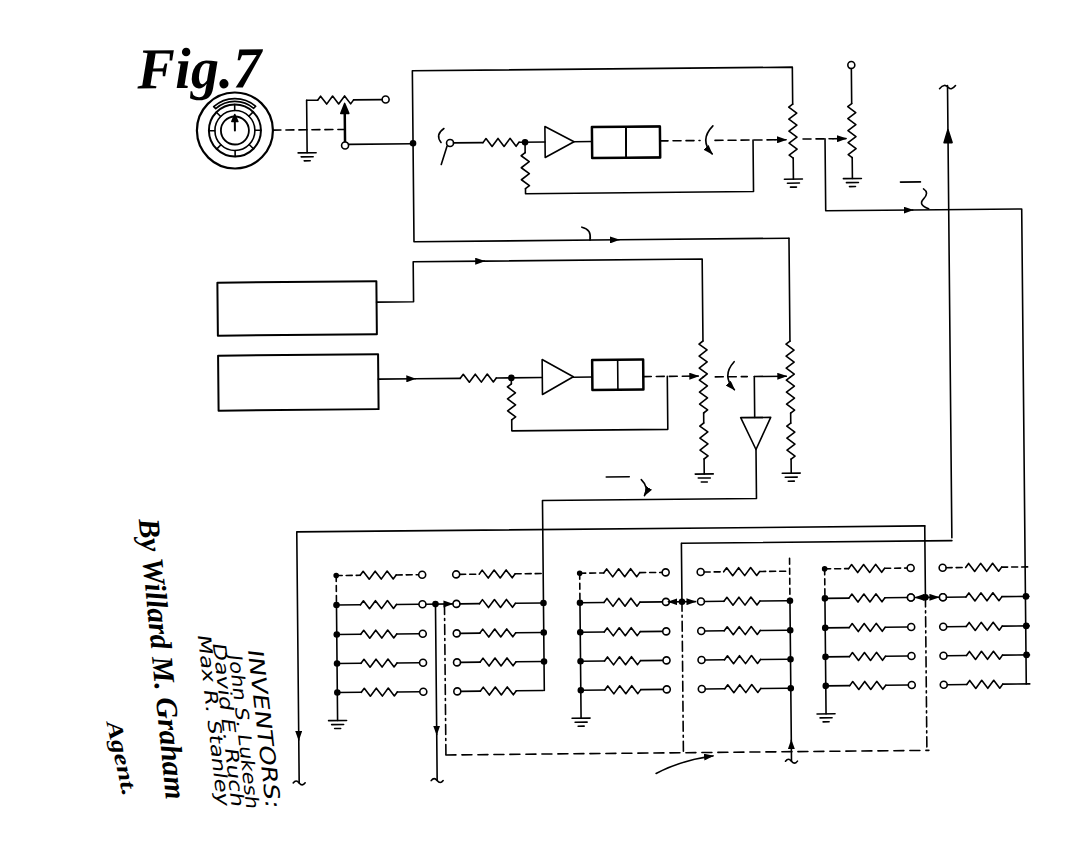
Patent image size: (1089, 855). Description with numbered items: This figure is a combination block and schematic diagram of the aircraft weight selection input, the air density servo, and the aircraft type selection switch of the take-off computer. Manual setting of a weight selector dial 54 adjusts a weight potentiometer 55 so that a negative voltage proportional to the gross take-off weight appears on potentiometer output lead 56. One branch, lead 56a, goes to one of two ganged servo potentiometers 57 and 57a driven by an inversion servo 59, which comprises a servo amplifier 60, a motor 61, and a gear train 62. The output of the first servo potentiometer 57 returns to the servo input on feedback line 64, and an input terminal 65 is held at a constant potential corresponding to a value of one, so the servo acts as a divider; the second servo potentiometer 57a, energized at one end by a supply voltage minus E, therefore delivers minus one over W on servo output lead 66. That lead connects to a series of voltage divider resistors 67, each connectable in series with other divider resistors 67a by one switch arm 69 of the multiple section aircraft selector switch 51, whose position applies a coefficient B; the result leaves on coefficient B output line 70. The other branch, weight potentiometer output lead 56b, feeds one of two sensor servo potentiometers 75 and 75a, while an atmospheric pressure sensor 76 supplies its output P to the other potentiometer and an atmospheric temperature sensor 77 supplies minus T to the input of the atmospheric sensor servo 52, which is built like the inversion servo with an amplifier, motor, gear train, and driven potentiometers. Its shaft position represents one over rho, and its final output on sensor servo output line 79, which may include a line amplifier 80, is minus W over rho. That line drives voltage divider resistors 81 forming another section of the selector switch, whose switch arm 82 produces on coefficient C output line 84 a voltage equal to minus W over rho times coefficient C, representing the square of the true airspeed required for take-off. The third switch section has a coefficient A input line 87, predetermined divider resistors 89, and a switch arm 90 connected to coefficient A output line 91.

The aircraft selector switch 51 is at (633, 734).
The atmospheric sensor servo 52 is at (585, 344).
The weight selector dial 54 is at (208, 140).
The weight potentiometer 55 is at (352, 94).
The potentiometer output lead 56 is at (348, 150).
The lead 56a is at (556, 69).
The weight potentiometer output lead 56b is at (457, 240).
The first servo potentiometer 57 is at (790, 113).
The second servo potentiometer 57a is at (858, 112).
The inversion servo 59 is at (637, 107).
The servo amplifier 60 is at (552, 156).
The motor 61 is at (612, 160).
The gear train 62 is at (652, 160).
The feedback line 64 is at (652, 193).
The input terminal 65 is at (444, 163).
The servo output lead 66 is at (1024, 284).
The voltage divider resistors 67 is at (988, 631).
The divider resistors 67a is at (859, 660).
The switch arm 69 is at (928, 595).
The coefficient B output line 70 is at (296, 649).
The sensor servo potentiometer 75 is at (707, 346).
The sensor servo potentiometer 75a is at (793, 346).
The atmospheric pressure sensor 76 is at (219, 300).
The atmospheric temperature sensor 77 is at (219, 375).
The sensor servo output line 79 is at (744, 419).
The line amplifier 80 is at (712, 474).
The voltage divider resistors 81 is at (392, 601).
The switch arm 82 is at (440, 599).
The coefficient C output line 84 is at (436, 709).
The coefficient A input line 87 is at (790, 717).
The divider resistors 89 is at (736, 690).
The switch arm 90 is at (680, 599).
The coefficient A output line 91 is at (953, 128).